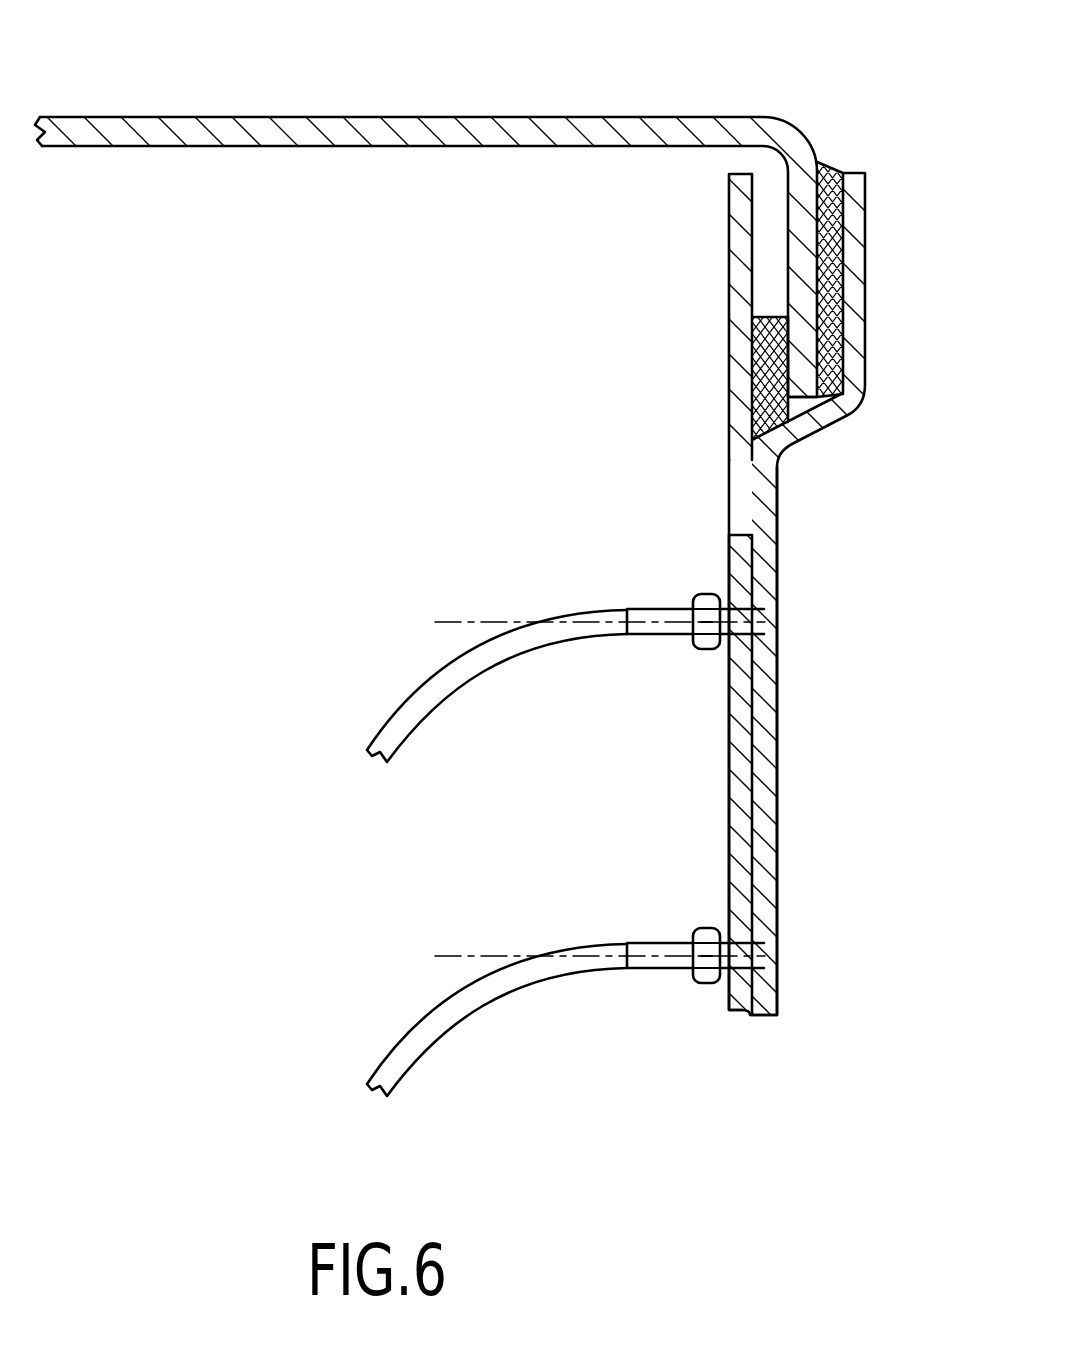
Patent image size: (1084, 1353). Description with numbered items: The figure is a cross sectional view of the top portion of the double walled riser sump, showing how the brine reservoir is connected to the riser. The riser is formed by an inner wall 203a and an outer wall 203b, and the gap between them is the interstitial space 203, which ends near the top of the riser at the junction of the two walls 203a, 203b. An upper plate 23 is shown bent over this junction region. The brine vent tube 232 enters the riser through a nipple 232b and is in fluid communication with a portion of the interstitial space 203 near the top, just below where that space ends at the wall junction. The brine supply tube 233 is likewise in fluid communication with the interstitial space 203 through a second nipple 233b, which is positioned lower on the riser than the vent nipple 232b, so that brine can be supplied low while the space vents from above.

The inner liner panel 23 is at (525, 127).
The interstitial space 203 is at (775, 565).
The riser inner wall 203a is at (777, 767).
The riser outer wall 203b is at (728, 777).
The brine vent tube 232 is at (404, 678).
The nipple 232b is at (667, 615).
The brine supply tube 233 is at (395, 1013).
The nipple 233b is at (655, 948).